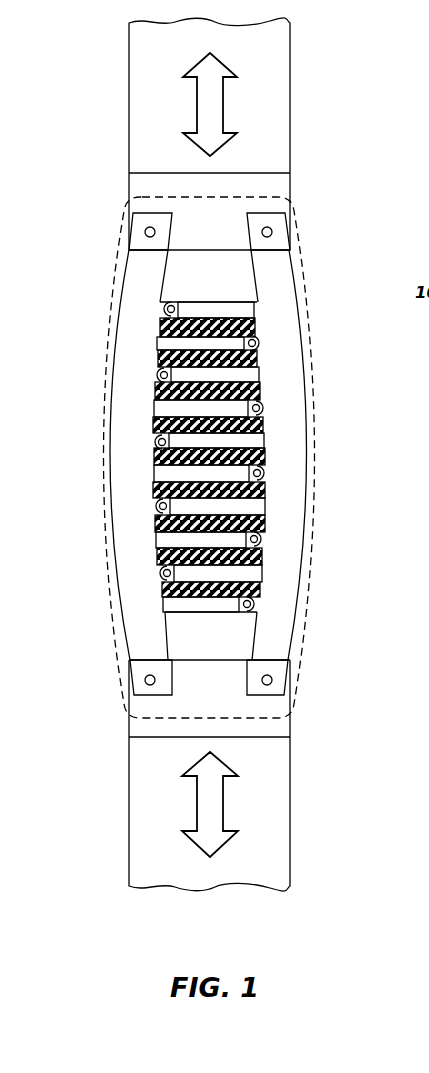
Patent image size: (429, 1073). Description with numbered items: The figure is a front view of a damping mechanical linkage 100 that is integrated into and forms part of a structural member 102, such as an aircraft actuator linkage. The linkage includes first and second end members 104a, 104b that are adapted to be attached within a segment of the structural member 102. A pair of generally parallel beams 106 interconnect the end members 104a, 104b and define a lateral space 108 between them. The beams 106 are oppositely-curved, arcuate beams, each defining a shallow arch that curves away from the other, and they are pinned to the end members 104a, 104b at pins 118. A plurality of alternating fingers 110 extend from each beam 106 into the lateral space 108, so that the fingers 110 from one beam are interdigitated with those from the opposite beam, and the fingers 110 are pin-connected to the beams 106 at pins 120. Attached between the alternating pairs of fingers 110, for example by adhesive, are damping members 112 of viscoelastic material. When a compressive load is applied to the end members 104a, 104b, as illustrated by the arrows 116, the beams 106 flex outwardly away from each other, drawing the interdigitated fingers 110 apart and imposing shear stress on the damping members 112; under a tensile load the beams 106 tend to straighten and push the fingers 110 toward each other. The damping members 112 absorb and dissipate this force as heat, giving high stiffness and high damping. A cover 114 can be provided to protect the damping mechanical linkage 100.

The damping mechanical linkage 100 is at (320, 295).
The structural member 102 is at (277, 95).
The first end member 104a is at (278, 182).
The second end member 104b is at (273, 708).
The beams 106 is at (280, 458).
The lateral space 108 is at (213, 420).
The fingers 110 is at (192, 508).
The damping members 112 is at (260, 408).
The cover 114 is at (305, 618).
The arrows 116 is at (208, 107).
The pins 118 is at (263, 229).
The pins 120 is at (261, 474).